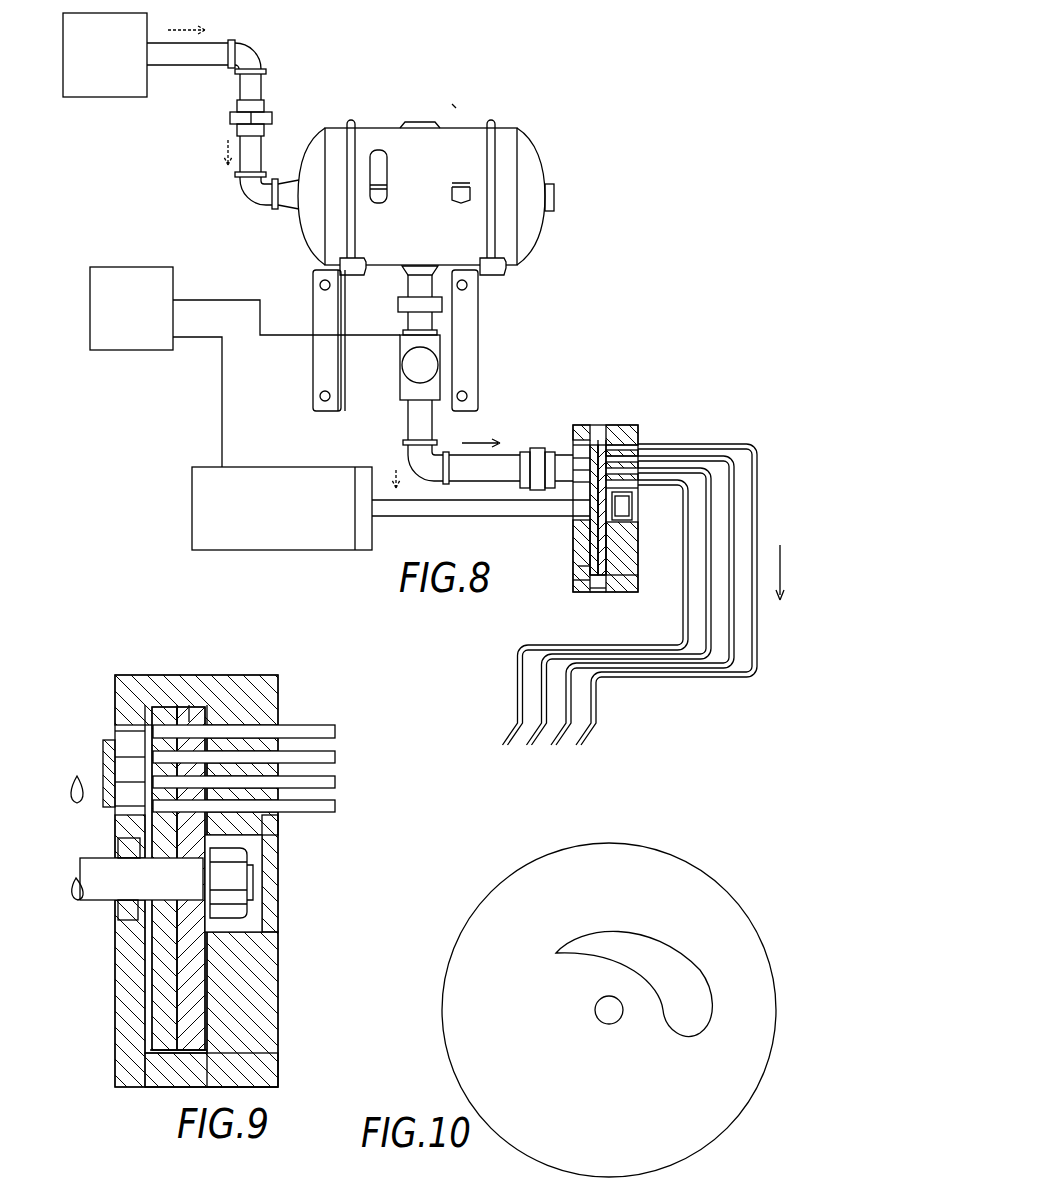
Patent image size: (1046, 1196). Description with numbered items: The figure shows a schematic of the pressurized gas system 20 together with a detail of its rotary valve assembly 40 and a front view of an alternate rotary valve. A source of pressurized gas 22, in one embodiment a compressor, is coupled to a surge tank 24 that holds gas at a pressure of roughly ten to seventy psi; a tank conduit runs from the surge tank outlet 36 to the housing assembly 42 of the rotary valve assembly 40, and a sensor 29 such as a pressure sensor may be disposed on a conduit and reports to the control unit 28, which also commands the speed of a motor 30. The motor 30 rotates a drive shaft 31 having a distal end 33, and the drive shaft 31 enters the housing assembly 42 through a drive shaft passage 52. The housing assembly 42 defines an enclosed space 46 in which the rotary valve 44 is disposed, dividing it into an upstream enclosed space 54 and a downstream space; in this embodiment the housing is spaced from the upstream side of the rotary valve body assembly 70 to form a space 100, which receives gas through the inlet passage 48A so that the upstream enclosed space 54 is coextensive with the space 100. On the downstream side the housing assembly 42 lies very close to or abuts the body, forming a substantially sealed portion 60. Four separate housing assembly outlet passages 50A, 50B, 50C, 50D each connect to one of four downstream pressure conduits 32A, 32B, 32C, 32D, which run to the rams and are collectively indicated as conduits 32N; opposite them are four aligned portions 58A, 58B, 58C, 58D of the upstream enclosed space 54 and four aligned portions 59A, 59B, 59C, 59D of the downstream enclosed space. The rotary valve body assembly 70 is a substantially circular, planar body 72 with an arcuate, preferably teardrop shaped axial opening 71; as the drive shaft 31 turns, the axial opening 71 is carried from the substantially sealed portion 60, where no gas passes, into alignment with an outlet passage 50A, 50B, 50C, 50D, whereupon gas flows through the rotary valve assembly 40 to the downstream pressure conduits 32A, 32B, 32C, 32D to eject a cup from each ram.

In FIG. 8, the pressurized gas system 20 is at (453, 108).
In FIG. 8, the source of pressurized gas 22 is at (95, 67).
In FIG. 8, the surge tank 24 is at (530, 150).
In FIG. 8, the control unit 28 is at (121, 319).
In FIG. 8, the sensor 29 is at (405, 345).
In FIG. 8, the motor 30 is at (272, 519).
In FIG. 9, the drive shaft 31 is at (80, 876).
In FIG. 8, the downstream pressure conduit 32A is at (760, 488).
In FIG. 9, the downstream pressure conduit 32A is at (337, 736).
In FIG. 8, the downstream pressure conduit 32B is at (737, 537).
In FIG. 9, the downstream pressure conduit 32B is at (337, 760).
In FIG. 8, the downstream pressure conduit 32C is at (705, 562).
In FIG. 9, the downstream pressure conduit 32C is at (337, 786).
In FIG. 8, the downstream pressure conduit 32D is at (683, 604).
In FIG. 9, the downstream pressure conduit 32D is at (340, 816).
In FIG. 8, the conduits 32N is at (720, 690).
In FIG. 9, the distal end 33 is at (263, 893).
In FIG. 8, the outlet 36 is at (409, 283).
In FIG. 8, the rotary valve assembly 40 is at (582, 474).
In FIG. 8, the housing assembly 42 is at (598, 408).
In FIG. 9, the housing assembly 42 is at (248, 675).
In FIG. 8, the rotary valve 44 is at (573, 549).
In FIG. 9, the rotary valve 44 is at (162, 702).
In FIG. 8, the enclosed space 46 is at (578, 581).
In FIG. 8, the inlet pipe 48A is at (549, 468).
In FIG. 8, the housing assembly outlet passage 50A is at (619, 437).
In FIG. 8, the housing assembly outlet passage 50B is at (626, 443).
In FIG. 8, the housing assembly outlet passage 50C is at (631, 491).
In FIG. 8, the housing assembly outlet passage 50D is at (644, 509).
In FIG. 8, the drive shaft passage 52 is at (578, 509).
In FIG. 9, the drive shaft passage 52 is at (118, 913).
In FIG. 8, the upstream enclosed space 54 is at (581, 569).
In FIG. 8, the aligned portion of the upstream enclosed space 58A is at (586, 432).
In FIG. 9, the aligned portion of the upstream enclosed space 58A is at (141, 735).
In FIG. 8, the aligned portion of the upstream enclosed space 58B is at (586, 441).
In FIG. 9, the aligned portion of the upstream enclosed space 58B is at (141, 761).
In FIG. 8, the aligned portion of the upstream enclosed space 58C is at (586, 464).
In FIG. 9, the aligned portion of the upstream enclosed space 58C is at (77, 776).
In FIG. 8, the aligned portion of the upstream enclosed space 58D is at (581, 481).
In FIG. 9, the aligned portion of the upstream enclosed space 58D is at (132, 816).
In FIG. 9, the aligned portion of the downstream enclosed space 59A is at (179, 706).
In FIG. 9, the aligned portion of the downstream enclosed space 59B is at (246, 721).
In FIG. 9, the aligned portion of the downstream enclosed space 59C is at (258, 811).
In FIG. 9, the aligned portion of the downstream enclosed space 59D is at (172, 879).
In FIG. 8, the substantially sealed portion 60 is at (621, 597).
In FIG. 9, the substantially sealed portion 60 is at (208, 1016).
In FIG. 8, the rotary valve body assembly 70 is at (601, 597).
In FIG. 9, the rotary valve body assembly 70 is at (153, 1086).
In FIG. 10, the rotary valve body assembly 70 is at (463, 972).
In FIG. 10, the axial opening 71 is at (673, 946).
In FIG. 10, the circular planar body 72 is at (458, 1034).
In FIG. 8, the housing assembly space 100 is at (592, 589).
In FIG. 9, the housing assembly space 100 is at (148, 1029).